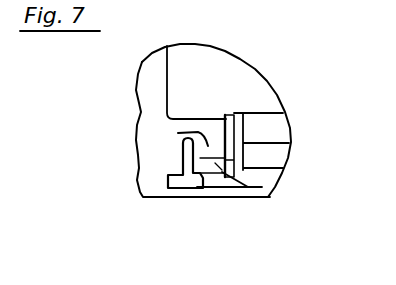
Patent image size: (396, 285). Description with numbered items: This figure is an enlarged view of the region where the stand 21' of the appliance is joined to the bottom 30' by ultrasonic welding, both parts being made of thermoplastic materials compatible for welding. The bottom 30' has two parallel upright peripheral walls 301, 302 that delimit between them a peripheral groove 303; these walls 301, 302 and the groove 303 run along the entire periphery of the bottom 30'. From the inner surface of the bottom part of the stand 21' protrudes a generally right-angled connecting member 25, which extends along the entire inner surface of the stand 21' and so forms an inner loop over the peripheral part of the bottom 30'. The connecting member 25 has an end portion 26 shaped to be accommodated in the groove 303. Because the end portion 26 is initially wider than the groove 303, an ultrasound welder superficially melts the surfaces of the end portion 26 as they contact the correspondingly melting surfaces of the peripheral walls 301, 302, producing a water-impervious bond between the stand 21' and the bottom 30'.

The stand 21' is at (184, 120).
The connecting member 25 is at (192, 118).
The end portion 26 is at (179, 133).
The bottom 30' is at (295, 123).
The peripheral wall 301 is at (190, 163).
The peripheral wall 302 is at (238, 116).
The peripheral groove 303 is at (258, 195).